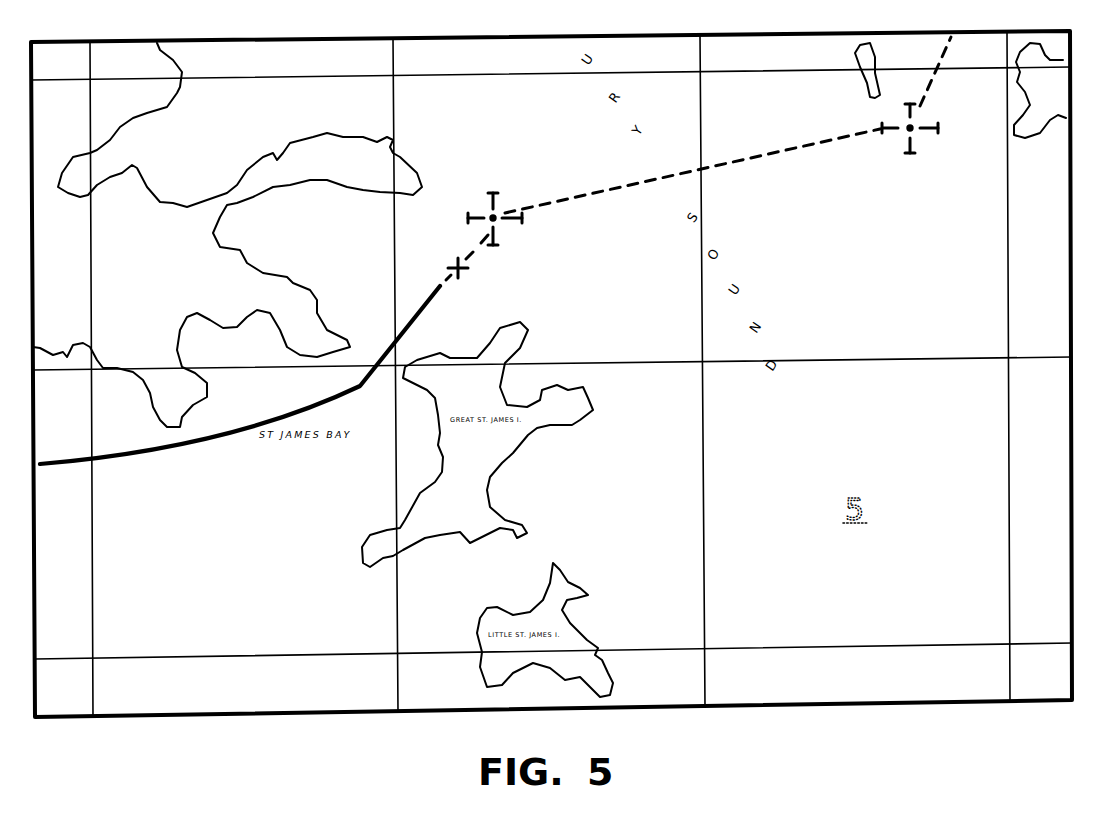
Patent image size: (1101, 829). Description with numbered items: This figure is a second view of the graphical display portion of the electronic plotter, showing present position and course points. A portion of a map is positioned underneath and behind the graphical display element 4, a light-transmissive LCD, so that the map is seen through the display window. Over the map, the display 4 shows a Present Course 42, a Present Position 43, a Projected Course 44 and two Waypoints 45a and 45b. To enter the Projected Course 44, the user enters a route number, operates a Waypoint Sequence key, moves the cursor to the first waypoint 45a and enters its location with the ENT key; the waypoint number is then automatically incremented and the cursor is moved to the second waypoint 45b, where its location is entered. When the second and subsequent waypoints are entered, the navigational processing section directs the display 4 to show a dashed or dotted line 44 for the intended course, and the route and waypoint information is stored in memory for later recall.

The graphical display element 4 is at (843, 714).
The Present Course 42 is at (172, 450).
The Present Position 43 is at (462, 274).
The Projected Course 44 is at (639, 191).
The first waypoint 45a is at (498, 190).
The second waypoint 45b is at (908, 158).